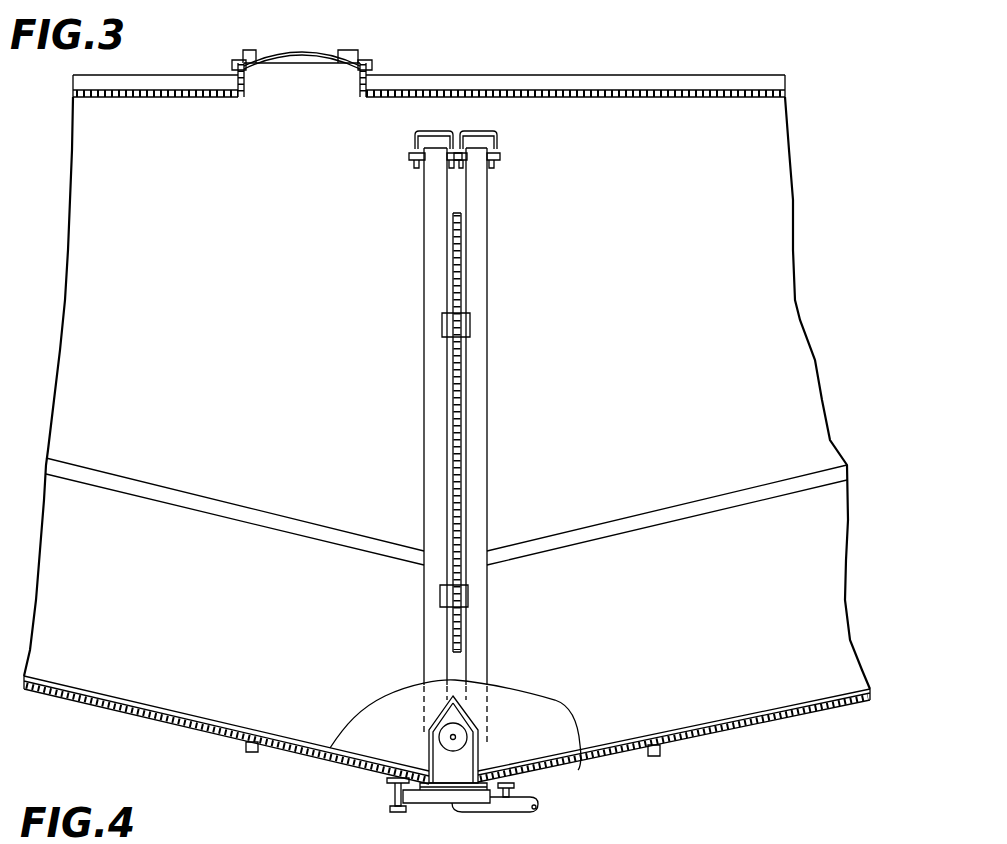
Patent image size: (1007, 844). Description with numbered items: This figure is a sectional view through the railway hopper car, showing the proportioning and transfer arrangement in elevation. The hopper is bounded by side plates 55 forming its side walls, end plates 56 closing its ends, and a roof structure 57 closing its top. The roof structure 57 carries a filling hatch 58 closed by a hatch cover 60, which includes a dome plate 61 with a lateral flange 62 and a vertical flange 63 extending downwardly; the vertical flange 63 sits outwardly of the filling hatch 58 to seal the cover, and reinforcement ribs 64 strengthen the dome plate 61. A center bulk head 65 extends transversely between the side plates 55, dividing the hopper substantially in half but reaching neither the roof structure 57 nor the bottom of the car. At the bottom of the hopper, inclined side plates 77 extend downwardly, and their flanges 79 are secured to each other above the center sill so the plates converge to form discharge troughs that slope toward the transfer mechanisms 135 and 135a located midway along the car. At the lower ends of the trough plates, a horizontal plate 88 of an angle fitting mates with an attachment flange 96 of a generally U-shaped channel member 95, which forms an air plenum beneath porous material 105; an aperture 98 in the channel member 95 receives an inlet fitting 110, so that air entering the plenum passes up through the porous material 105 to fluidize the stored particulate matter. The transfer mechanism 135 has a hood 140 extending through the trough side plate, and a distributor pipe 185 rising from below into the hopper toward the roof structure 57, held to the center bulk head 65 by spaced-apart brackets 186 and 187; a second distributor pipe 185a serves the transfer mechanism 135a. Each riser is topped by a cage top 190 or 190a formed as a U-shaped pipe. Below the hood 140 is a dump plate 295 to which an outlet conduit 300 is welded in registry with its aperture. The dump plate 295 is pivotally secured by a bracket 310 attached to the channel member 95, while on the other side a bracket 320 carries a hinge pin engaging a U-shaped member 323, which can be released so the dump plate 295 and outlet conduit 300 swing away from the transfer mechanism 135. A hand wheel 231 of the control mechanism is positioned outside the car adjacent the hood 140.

The side plates 55 is at (238, 242).
The end plates 56 is at (705, 831).
The roof structure 57 is at (598, 90).
The filling hatches 58 is at (372, 85).
The hatch covers 60 is at (305, 50).
The dome plate 61 is at (296, 50).
The lateral flange 62 is at (370, 66).
The vertical flange 63 is at (236, 64).
The reinforcement ribs 64 is at (248, 50).
The center bulk head 65 is at (463, 283).
The side plates 77 is at (196, 582).
The flanges 79 is at (206, 502).
The horizontal plate 88 is at (515, 762).
The channel member 95 is at (342, 766).
The attachment flange 96 is at (573, 766).
The aperture 98 is at (655, 745).
The porous material 105 is at (708, 722).
The inlet fittings 110 is at (246, 748).
The transfer mechanism 135 is at (411, 687).
The transfer mechanism 135a is at (498, 638).
The hood 140 is at (503, 705).
The distributor pipe 185 is at (424, 428).
The distributor pipe 185a is at (488, 440).
The bracket 186 is at (440, 603).
The bracket 187 is at (441, 328).
The cage top 190 is at (436, 131).
The cage top 190a is at (480, 131).
The hand wheel 231 is at (439, 738).
The dump plate 295 is at (435, 803).
The outlet conduit 300 is at (518, 810).
The bracket 310 is at (514, 787).
The bracket 320 is at (393, 792).
The U-shaped member 323 is at (392, 809).